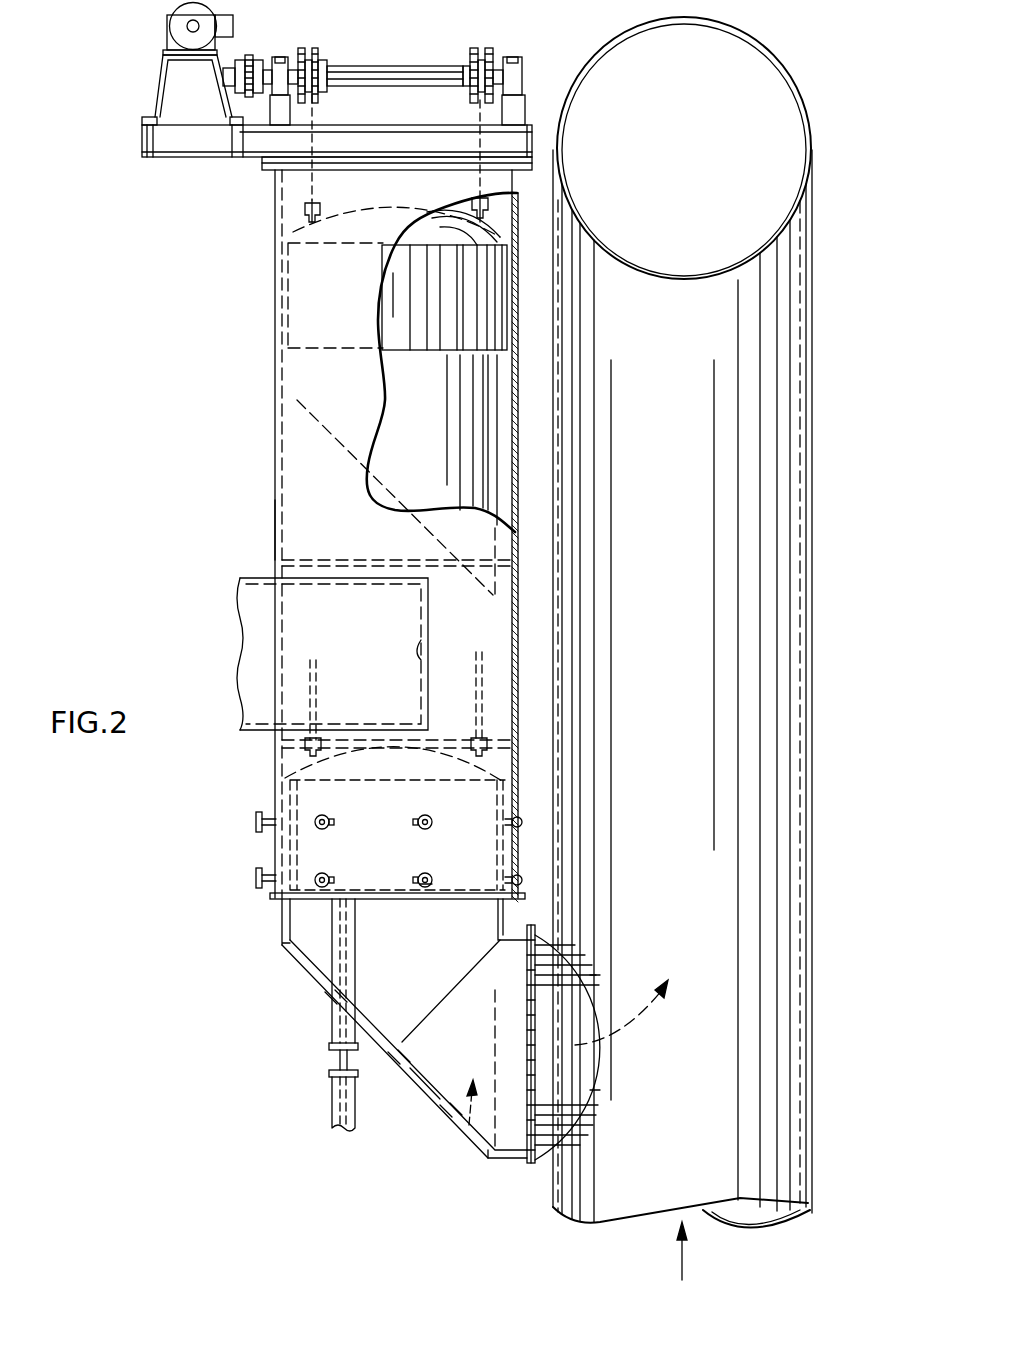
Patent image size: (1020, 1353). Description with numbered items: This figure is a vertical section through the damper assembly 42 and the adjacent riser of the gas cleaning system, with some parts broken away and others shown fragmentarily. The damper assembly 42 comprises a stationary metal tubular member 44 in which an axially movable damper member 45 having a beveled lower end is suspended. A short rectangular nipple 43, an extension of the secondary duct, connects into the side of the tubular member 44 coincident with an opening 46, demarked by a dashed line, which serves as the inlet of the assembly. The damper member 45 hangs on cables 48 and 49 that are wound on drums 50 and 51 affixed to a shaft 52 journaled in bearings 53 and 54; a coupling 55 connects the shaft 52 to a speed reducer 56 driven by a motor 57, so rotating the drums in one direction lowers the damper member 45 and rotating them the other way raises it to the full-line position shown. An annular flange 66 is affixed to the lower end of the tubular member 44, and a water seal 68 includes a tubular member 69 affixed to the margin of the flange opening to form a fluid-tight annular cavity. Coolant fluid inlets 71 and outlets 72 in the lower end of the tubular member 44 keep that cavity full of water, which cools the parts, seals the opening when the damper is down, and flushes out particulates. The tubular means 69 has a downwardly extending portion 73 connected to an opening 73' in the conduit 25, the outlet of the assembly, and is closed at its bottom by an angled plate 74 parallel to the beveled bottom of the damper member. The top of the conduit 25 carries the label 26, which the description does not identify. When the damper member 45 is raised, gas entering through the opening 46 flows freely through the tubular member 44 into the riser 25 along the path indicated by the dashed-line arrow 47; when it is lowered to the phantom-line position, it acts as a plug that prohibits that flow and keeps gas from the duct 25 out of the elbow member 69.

The conduit 25 is at (755, 1055).
The pipe rim 26 is at (807, 108).
The damper assembly 42 is at (274, 442).
The short rectangular nipple 43 is at (262, 578).
The stationary metal tubular member 44 is at (276, 524).
The damper member 45 is at (428, 452).
The opening 46 is at (414, 657).
The dashed line arrow 47 is at (632, 1026).
The cable 48 is at (477, 181).
The cable 49 is at (316, 192).
The drum 50 is at (477, 53).
The drum 51 is at (323, 47).
The shaft 52 is at (415, 65).
The bearing 53 is at (278, 57).
The bearing 54 is at (513, 58).
The coupling 55 is at (258, 60).
The speed reducer 56 is at (176, 77).
The motor 57 is at (170, 17).
The annular flange 66 is at (273, 899).
The water seal 68 is at (252, 834).
The tubular member 69 is at (470, 1125).
The coolant fluid inlets 71 is at (427, 888).
The outlets 72 is at (432, 820).
The tubular downwardly extending portion 73 is at (404, 1028).
The opening 73' is at (599, 1043).
The plate 74 is at (423, 1097).